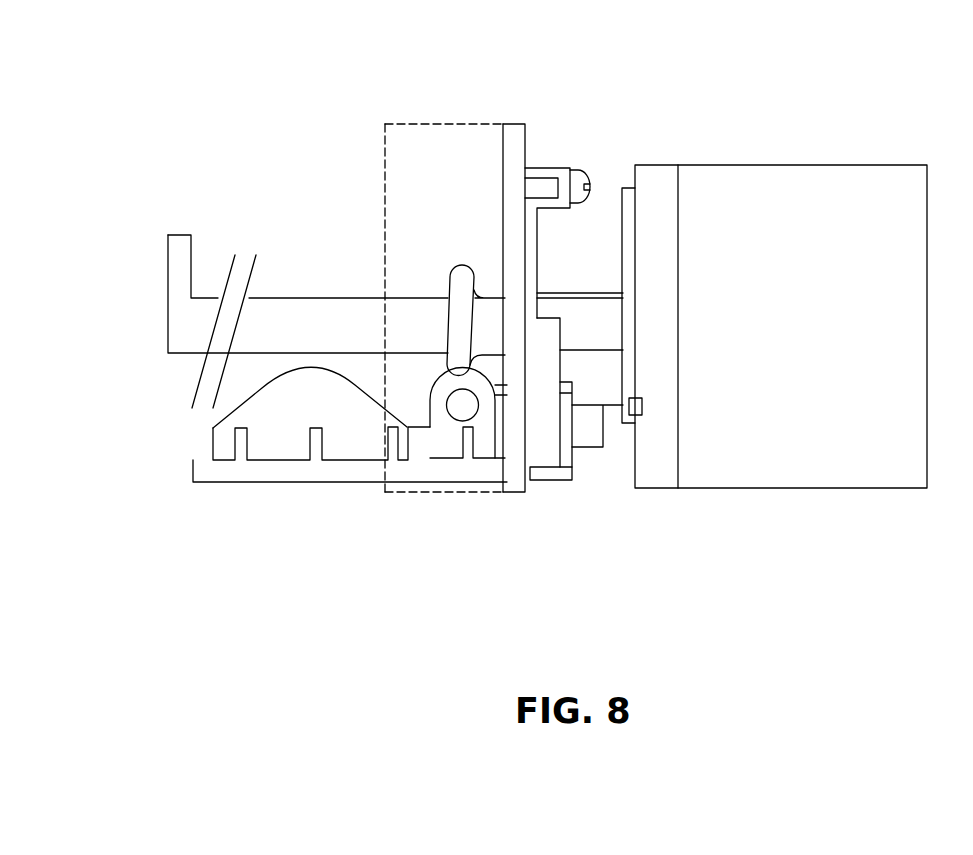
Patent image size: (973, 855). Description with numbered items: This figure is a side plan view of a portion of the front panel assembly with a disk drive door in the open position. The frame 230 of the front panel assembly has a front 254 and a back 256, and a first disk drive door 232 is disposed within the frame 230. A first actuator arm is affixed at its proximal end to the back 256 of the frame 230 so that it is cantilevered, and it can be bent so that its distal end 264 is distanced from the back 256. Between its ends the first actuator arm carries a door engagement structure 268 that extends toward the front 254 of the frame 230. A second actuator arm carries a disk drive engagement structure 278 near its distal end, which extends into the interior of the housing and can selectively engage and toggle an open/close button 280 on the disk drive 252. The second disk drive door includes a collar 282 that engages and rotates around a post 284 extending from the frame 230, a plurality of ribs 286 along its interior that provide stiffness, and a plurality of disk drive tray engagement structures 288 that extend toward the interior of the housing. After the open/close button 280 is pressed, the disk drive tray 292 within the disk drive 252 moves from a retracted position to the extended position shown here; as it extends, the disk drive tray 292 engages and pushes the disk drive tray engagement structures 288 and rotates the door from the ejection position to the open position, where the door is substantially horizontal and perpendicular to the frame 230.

The frame 230 is at (475, 133).
The first disk drive door 232 is at (217, 473).
The disk drive 252 is at (833, 455).
The front 254 is at (385, 133).
The back 256 is at (527, 133).
The distal end 264 is at (553, 443).
The door engagement structure 268 is at (468, 322).
The disk drive engagement structure 278 is at (619, 418).
The open/close button 280 is at (639, 413).
The collar 282 is at (442, 397).
The post 284 is at (460, 408).
The ribs 286 is at (317, 435).
The disk drive tray engagement structures 288 is at (292, 397).
The disk drive tray 292 is at (286, 300).